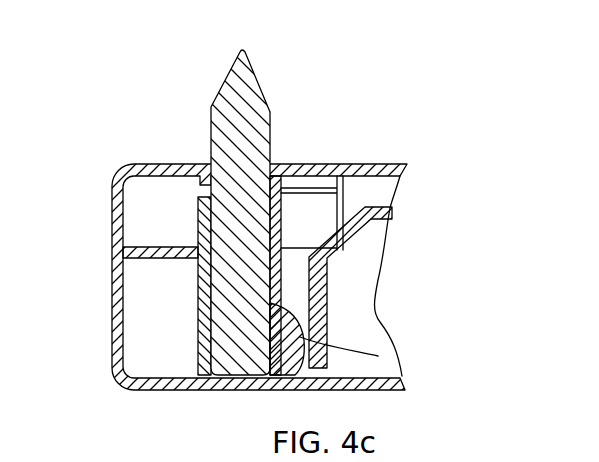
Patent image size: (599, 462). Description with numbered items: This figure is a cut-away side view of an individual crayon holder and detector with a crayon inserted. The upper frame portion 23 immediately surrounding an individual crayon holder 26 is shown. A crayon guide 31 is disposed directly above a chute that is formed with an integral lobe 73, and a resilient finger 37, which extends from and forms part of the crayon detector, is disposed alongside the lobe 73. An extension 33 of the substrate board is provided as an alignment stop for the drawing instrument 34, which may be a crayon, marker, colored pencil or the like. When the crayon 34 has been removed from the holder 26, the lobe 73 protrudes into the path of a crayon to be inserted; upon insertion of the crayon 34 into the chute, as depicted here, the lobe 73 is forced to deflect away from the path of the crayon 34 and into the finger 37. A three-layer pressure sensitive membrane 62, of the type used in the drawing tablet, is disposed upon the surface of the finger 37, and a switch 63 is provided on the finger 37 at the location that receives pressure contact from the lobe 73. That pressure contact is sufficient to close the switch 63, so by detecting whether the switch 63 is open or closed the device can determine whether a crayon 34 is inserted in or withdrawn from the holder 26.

The upper frame portion 23 is at (150, 168).
The crayon holder 26 is at (198, 141).
The crayon guide 31 is at (269, 165).
The extension of the substrate board 33 is at (368, 374).
The drawing instrument 34 is at (256, 83).
The resilient finger 37 is at (327, 278).
The three-layer pressure sensitive membrane 62 is at (384, 206).
The switch 63 is at (377, 356).
The lobe 73 is at (283, 350).